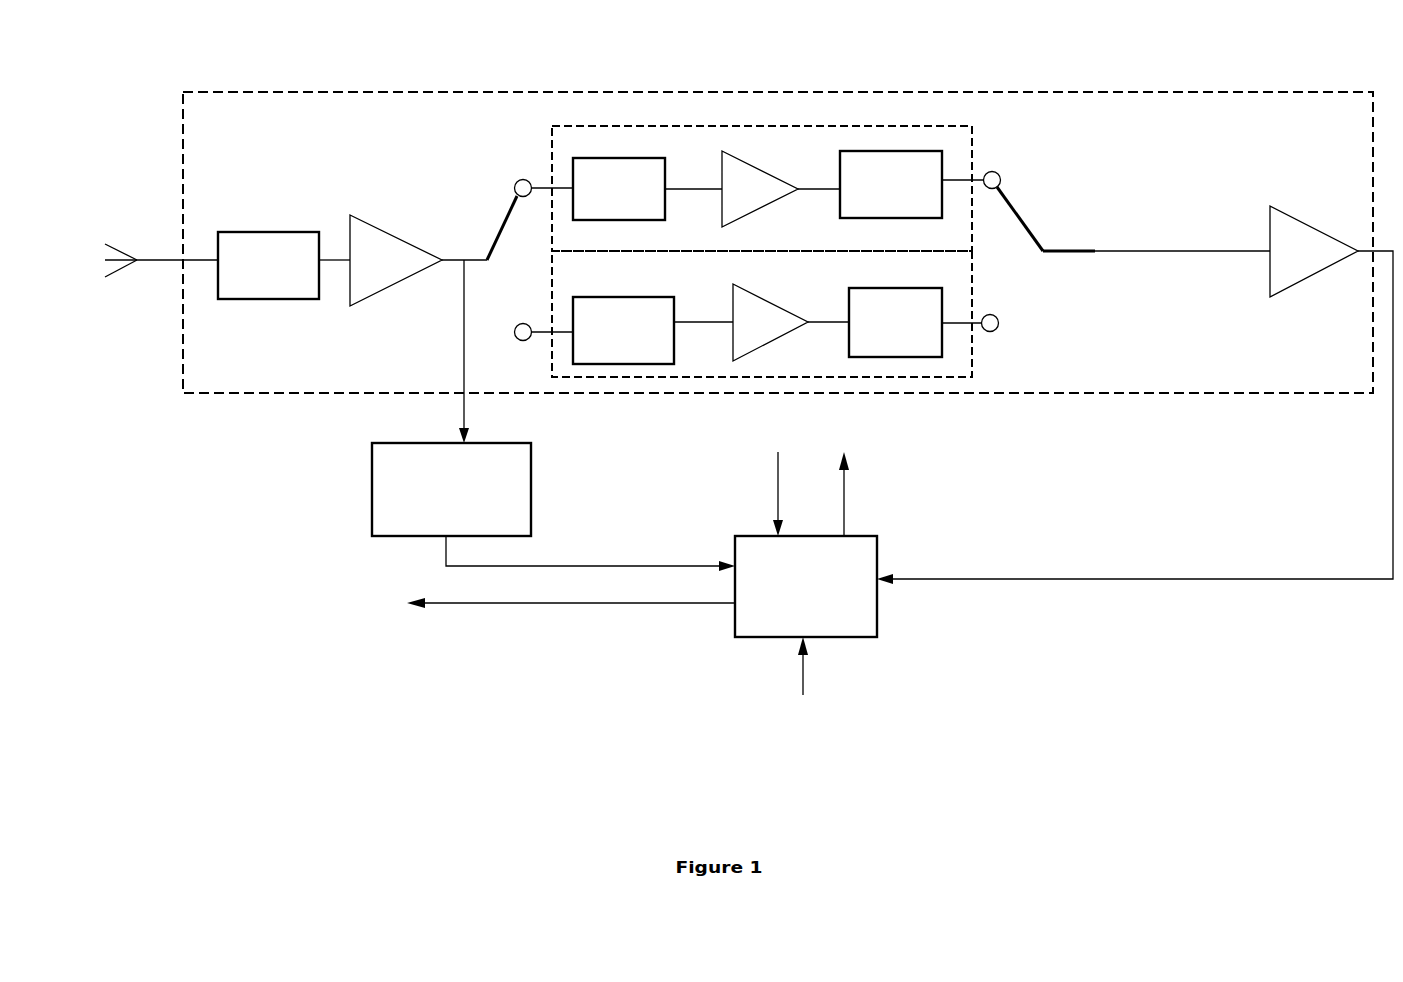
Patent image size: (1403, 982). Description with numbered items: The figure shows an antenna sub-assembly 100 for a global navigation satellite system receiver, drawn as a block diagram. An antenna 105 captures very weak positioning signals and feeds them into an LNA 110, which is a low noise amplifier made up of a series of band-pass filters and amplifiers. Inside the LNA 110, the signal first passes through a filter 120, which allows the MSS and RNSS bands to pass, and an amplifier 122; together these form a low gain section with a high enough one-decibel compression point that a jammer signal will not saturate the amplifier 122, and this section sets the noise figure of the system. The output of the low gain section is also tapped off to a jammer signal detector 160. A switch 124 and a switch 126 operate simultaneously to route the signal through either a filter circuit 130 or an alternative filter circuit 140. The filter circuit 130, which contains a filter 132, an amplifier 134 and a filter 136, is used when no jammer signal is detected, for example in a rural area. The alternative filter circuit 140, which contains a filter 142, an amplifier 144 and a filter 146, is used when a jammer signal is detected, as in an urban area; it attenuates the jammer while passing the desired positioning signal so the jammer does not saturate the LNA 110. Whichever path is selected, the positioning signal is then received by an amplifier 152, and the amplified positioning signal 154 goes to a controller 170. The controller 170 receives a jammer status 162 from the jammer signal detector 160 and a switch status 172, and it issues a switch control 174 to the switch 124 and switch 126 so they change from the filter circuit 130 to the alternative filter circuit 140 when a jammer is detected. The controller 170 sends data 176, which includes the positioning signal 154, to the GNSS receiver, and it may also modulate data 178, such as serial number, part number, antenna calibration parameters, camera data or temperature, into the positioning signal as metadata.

The antenna sub-assembly 100 is at (144, 68).
The antenna 105 is at (161, 254).
The LNA 110 is at (211, 120).
The filter 120 is at (253, 274).
The amplifier 122 is at (368, 271).
The switch 124 is at (460, 211).
The switch 126 is at (1039, 211).
The filter circuit 130 is at (562, 150).
The filter 132 is at (604, 198).
The amplifier 134 is at (737, 198).
The filter 136 is at (876, 193).
The alternative filter circuit 140 is at (570, 284).
The filter 142 is at (609, 340).
The amplifier 144 is at (745, 331).
The filter 146 is at (880, 330).
The amplifier 152 is at (1314, 251).
The amplified positioning signal 154 is at (1090, 570).
The jammer signal detector 160 is at (388, 472).
The jammer status 162 is at (590, 534).
The controller 170 is at (791, 588).
The switch status 172 is at (747, 482).
The switch control 174 is at (881, 482).
The data 176 is at (570, 665).
The data 178 is at (791, 750).